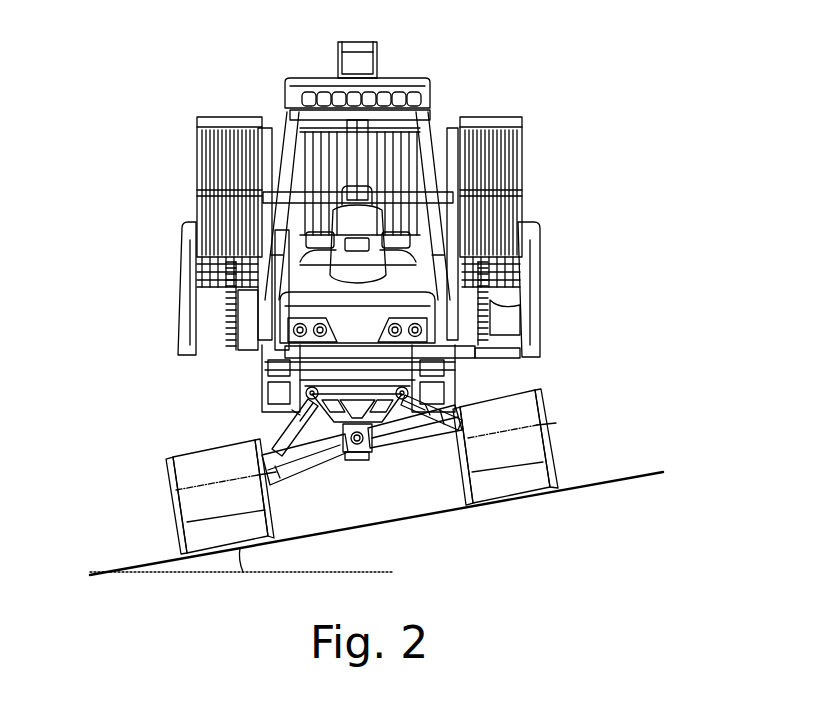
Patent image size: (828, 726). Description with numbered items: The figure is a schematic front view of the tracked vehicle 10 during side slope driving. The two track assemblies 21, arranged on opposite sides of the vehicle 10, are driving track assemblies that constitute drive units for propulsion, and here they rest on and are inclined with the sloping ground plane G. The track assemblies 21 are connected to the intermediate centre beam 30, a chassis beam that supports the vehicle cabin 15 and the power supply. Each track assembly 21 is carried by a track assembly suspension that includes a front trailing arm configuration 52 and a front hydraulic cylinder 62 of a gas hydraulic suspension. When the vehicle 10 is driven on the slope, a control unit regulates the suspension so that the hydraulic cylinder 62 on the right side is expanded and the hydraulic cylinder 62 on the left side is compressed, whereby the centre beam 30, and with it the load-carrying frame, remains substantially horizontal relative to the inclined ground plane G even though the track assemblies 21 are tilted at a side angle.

The vehicle 10 is at (516, 54).
The vehicle cabin 15 is at (310, 75).
The centre beam 30 is at (318, 408).
The front hydraulic cylinder 62 is at (286, 418).
The front trailing arm configuration 52 is at (312, 467).
The track assembly 21 is at (172, 505).
The ground plane G is at (604, 485).